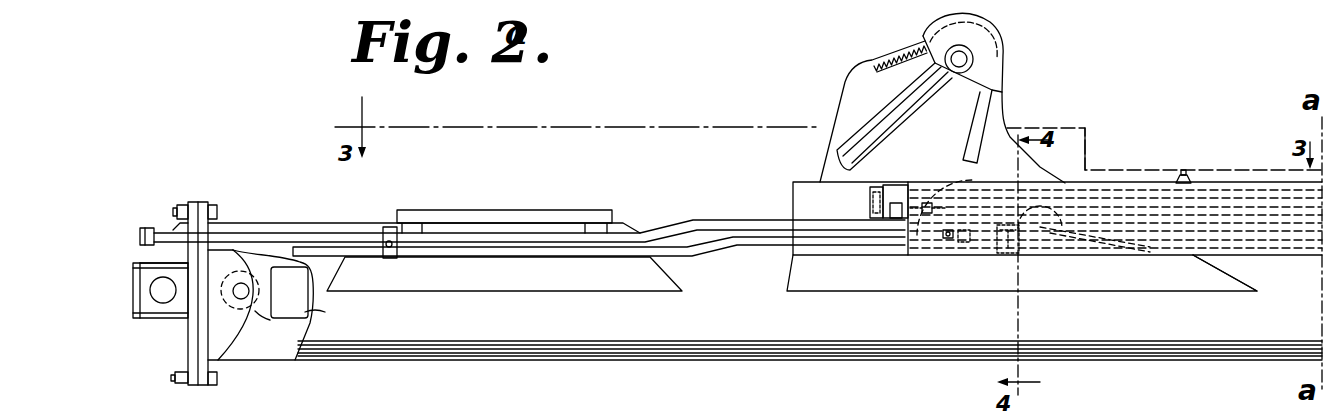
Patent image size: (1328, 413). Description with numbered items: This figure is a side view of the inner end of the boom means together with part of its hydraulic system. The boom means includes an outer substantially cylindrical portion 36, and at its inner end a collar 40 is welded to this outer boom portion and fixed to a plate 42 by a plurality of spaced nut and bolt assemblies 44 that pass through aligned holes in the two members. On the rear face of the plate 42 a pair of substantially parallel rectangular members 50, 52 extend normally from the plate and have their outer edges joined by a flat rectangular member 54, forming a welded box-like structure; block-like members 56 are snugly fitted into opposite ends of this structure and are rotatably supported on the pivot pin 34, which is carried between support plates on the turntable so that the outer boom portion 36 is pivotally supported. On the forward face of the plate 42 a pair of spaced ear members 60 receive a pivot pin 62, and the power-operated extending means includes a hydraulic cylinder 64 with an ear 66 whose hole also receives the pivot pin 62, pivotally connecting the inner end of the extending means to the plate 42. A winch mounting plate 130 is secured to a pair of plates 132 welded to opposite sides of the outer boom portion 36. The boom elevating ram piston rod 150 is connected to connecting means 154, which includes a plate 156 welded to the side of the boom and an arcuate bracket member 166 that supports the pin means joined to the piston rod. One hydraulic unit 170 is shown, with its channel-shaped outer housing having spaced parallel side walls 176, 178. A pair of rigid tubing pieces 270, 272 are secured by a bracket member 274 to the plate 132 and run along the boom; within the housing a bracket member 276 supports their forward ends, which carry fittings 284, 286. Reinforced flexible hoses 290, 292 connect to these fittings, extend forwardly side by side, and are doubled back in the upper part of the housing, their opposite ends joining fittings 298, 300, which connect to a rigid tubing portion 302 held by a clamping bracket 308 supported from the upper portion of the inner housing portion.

The pivot pin 34 is at (180, 372).
The outer substantially cylindrical portion 36 is at (335, 357).
The collar 40 is at (225, 331).
The plate 42 is at (191, 307).
The nut and bolt assemblies 44 is at (219, 213).
The rectangular member 50 is at (153, 264).
The rectangular member 52 is at (147, 320).
The flat substantially rectangular member 54 is at (134, 280).
The block-like members 56 is at (145, 297).
The ear members 60 is at (227, 336).
The pivot pin 62 is at (249, 291).
The hydraulic cylinder 64 is at (305, 312).
The ear 66 is at (255, 311).
The winch mounting plate 130 is at (548, 214).
The plates 132 is at (487, 283).
The piston rod 150 is at (882, 138).
The connecting means 154 is at (1022, 81).
The plate 156 is at (1075, 291).
The arcuate bracket member 166 is at (1000, 44).
The hydraulic unit 170 is at (1283, 264).
The side wall 176 is at (1292, 240).
The side wall 178 is at (797, 200).
The rigid tubing 270 is at (327, 234).
The rigid tubing 272 is at (345, 256).
The bracket member 274 is at (395, 258).
The bracket member 276 is at (928, 257).
The fitting 284 is at (1002, 253).
The fitting 286 is at (972, 252).
The reinforced hydraulic flexible hose 290 is at (905, 214).
The reinforced hydraulic flexible hose 292 is at (960, 196).
The fitting 298 is at (920, 184).
The fitting 300 is at (871, 209).
The rigid tubing portion 302 is at (1207, 192).
The clamping bracket 308 is at (1066, 149).